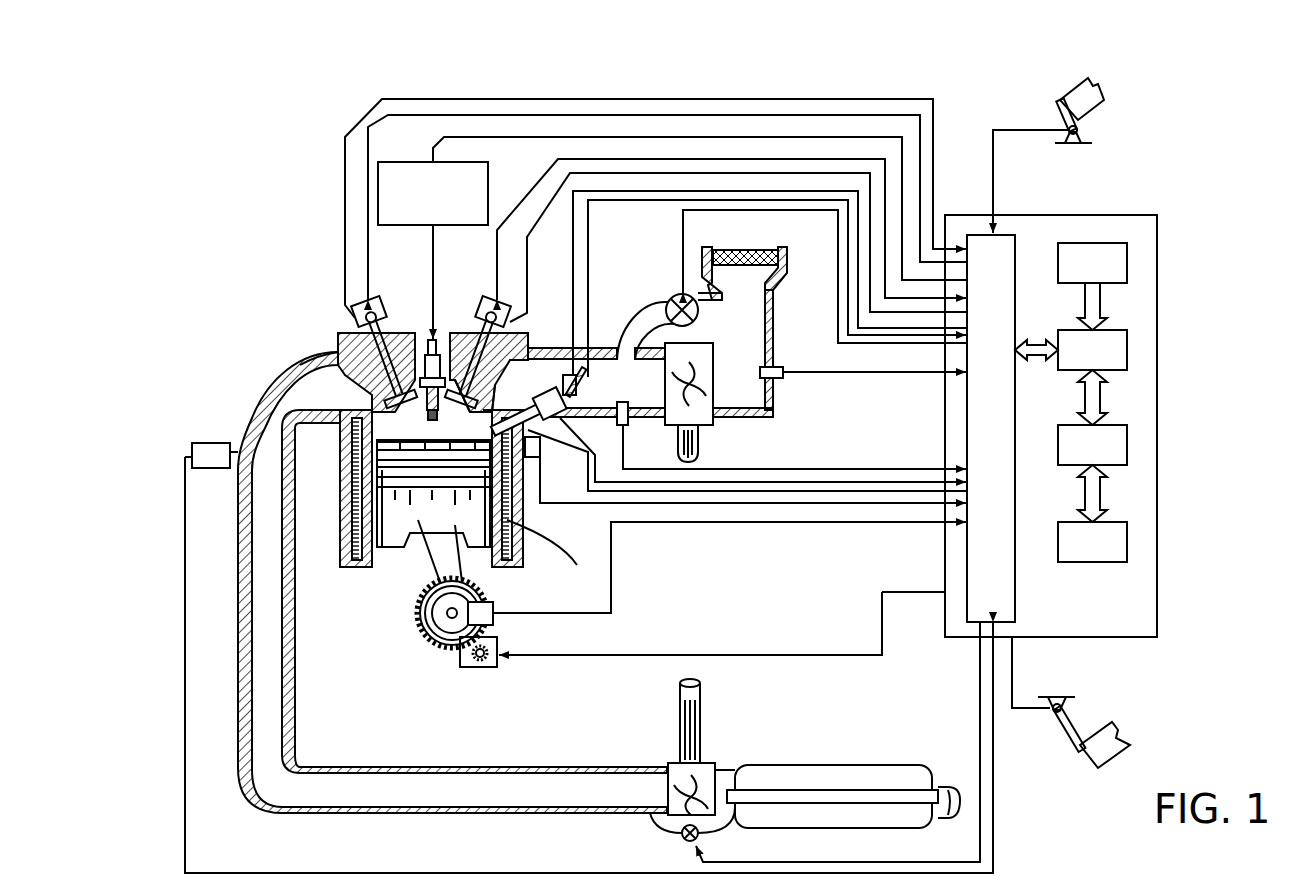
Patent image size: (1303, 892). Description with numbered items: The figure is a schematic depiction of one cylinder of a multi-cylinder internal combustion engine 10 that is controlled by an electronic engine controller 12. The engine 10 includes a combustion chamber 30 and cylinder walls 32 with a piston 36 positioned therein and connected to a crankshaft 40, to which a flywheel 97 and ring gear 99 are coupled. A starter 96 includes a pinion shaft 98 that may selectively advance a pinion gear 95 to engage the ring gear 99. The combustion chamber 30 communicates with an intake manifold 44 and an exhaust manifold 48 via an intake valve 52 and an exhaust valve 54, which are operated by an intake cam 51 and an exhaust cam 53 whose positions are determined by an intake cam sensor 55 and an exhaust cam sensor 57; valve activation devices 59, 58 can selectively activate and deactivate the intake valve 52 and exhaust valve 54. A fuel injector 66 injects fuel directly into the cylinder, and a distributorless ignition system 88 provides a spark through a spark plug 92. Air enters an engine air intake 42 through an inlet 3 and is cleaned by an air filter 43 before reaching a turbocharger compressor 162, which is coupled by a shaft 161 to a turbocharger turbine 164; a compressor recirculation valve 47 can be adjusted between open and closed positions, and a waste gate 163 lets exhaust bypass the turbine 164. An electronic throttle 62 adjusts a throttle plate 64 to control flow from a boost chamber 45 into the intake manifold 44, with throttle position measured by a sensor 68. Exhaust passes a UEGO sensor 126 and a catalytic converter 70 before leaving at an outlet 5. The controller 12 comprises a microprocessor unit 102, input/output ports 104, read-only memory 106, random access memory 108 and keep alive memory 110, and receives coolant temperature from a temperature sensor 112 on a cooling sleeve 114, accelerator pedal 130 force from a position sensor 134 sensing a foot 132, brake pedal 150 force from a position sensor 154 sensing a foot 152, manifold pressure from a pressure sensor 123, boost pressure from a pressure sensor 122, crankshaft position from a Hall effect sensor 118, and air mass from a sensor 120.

The inlet 3 is at (752, 247).
The outlet 5 is at (948, 780).
The internal combustion engine 10 is at (285, 292).
The electronic engine controller 12 is at (1157, 215).
The combustion chamber 30 is at (372, 490).
The cylinder walls 32 is at (380, 560).
The piston 36 is at (418, 540).
The crankshaft 40 is at (438, 640).
The engine air intake 42 is at (662, 258).
The air filter 43 is at (730, 265).
The intake manifold 44 is at (528, 390).
The boost chamber 45 is at (616, 395).
The compressor recirculation valve 47 is at (672, 296).
The exhaust manifold 48 is at (296, 402).
The intake cam 51 is at (484, 300).
The intake valve 52 is at (472, 402).
The exhaust cam 53 is at (378, 300).
The exhaust valve 54 is at (338, 368).
The intake cam sensor 55 is at (500, 315).
The exhaust cam sensor 57 is at (355, 312).
The valve activation device 58 is at (380, 314).
The valve activation device 59 is at (485, 316).
The electronic throttle 62 is at (585, 378).
The throttle plate 64 is at (578, 392).
The fuel injector 66 is at (530, 450).
The throttle position sensor 68 is at (602, 348).
The catalytic converter 70 is at (772, 765).
The distributorless ignition system 88 is at (390, 162).
The spark plug 92 is at (436, 340).
The pinion gear 95 is at (484, 660).
The starter 96 is at (495, 662).
The flywheel 97 is at (420, 620).
The pinion shaft 98 is at (475, 660).
The ring gear 99 is at (438, 650).
The microprocessor unit 102 is at (1127, 350).
The input/output ports 104 is at (1015, 240).
The read-only memory 106 is at (1127, 260).
The random access memory 108 is at (1127, 445).
The keep alive memory 110 is at (1127, 542).
The temperature sensor 112 is at (745, 470).
The cooling sleeve 114 is at (554, 554).
The Hall effect sensor 118 is at (493, 604).
The air mass sensor 120 is at (778, 367).
The pressure sensor 122 is at (628, 425).
The pressure sensor 123 is at (562, 414).
The Universal Exhaust Gas Oxygen sensor 126 is at (192, 447).
The accelerator pedal 130 is at (1104, 147).
The foot 132 is at (1102, 95).
The position sensor 134 is at (1087, 132).
The brake pedal 150 is at (1071, 709).
The foot 152 is at (1116, 724).
The position sensor 154 is at (1050, 704).
The shaft 161 is at (698, 440).
The turbocharger compressor 162 is at (703, 408).
The waste gate 163 is at (680, 845).
The turbocharger turbine 164 is at (668, 763).